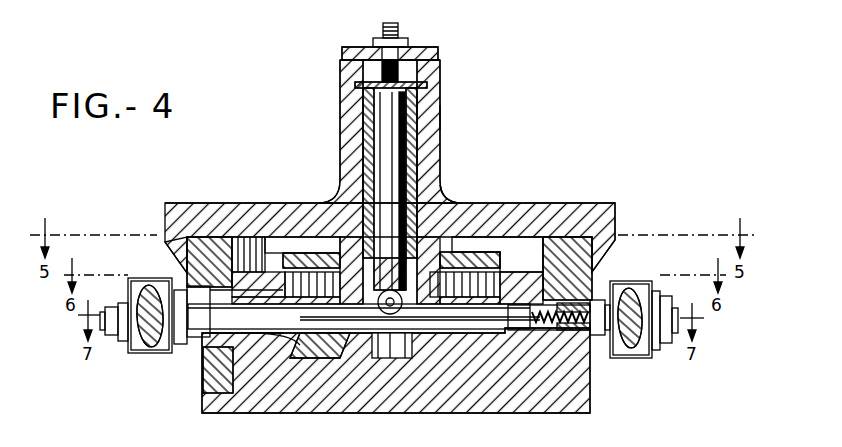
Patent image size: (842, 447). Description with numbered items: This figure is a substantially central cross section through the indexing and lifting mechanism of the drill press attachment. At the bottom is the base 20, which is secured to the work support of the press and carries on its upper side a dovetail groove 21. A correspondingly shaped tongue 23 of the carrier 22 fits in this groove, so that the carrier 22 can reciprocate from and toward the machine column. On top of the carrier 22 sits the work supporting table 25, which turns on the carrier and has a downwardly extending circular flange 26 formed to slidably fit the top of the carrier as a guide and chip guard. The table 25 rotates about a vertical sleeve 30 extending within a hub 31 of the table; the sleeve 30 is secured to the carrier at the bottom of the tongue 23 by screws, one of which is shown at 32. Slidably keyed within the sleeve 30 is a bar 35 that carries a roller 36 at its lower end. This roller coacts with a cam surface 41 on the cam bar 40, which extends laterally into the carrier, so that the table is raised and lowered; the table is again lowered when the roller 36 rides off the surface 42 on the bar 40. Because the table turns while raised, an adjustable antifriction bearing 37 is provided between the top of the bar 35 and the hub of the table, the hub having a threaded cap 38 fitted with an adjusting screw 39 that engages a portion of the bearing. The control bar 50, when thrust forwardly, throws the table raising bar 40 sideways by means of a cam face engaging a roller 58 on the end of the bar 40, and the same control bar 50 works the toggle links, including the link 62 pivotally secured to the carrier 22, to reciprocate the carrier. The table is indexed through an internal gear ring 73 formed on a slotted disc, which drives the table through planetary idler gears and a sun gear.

The base 20 is at (590, 392).
The dovetail groove 21 is at (317, 348).
The carrier 22 is at (593, 268).
The tongue 23 is at (345, 352).
The work supporting table 25 is at (276, 212).
The circular flange 26 is at (176, 246).
The sleeve 30 is at (440, 166).
The hub 31 is at (441, 118).
The screw 32 is at (430, 352).
The bar 35 is at (405, 148).
The roller 36 is at (447, 198).
The antifriction bearing 37 is at (427, 99).
The threaded cap 38 is at (430, 50).
The adjusting screw 39 is at (400, 30).
The cam bar 40 is at (258, 318).
The cam surface 41 is at (380, 310).
The surface 42 is at (352, 306).
The control bar 50 is at (205, 390).
The roller 58 is at (196, 345).
The toggle link 62 is at (138, 352).
The internal gear ring 73 is at (334, 272).